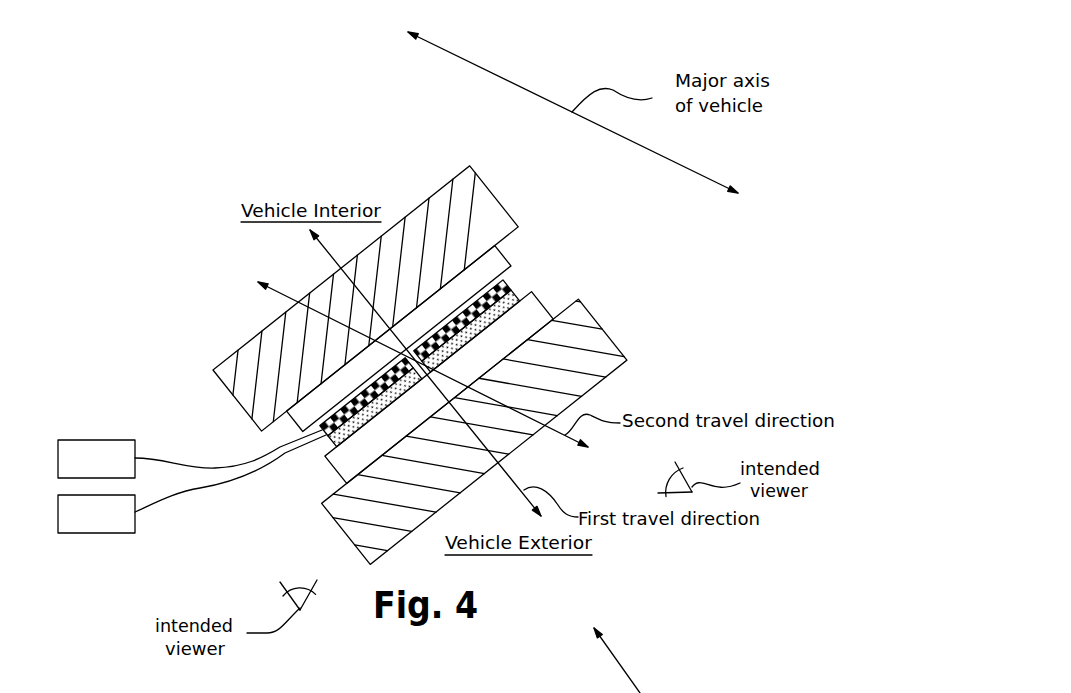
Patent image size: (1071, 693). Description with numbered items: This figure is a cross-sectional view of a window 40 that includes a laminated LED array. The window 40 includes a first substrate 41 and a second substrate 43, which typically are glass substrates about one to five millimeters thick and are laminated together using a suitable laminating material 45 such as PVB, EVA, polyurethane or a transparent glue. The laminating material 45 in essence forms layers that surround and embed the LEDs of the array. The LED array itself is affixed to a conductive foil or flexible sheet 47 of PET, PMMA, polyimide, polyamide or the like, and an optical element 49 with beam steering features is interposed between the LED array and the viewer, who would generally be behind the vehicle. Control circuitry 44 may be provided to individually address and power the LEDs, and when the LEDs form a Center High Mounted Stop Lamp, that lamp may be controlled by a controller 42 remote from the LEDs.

The window 40 is at (250, 502).
The first substrate 41 is at (494, 193).
The controller 42 is at (135, 528).
The second substrate 43 is at (603, 329).
The control circuitry 44 is at (97, 440).
The laminating material 45 is at (507, 255).
The conductive foil or flexible sheet 47 is at (517, 287).
The optical element 49 is at (526, 293).